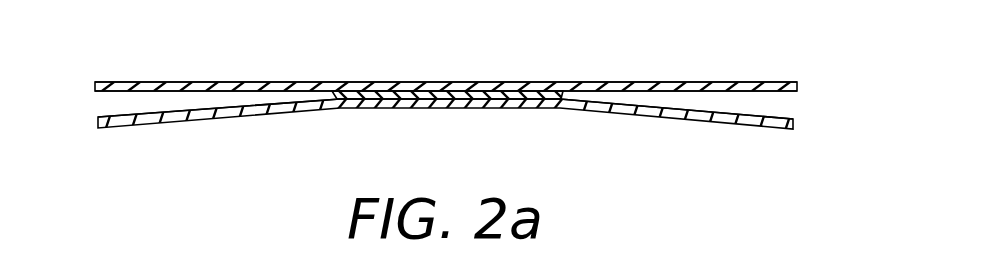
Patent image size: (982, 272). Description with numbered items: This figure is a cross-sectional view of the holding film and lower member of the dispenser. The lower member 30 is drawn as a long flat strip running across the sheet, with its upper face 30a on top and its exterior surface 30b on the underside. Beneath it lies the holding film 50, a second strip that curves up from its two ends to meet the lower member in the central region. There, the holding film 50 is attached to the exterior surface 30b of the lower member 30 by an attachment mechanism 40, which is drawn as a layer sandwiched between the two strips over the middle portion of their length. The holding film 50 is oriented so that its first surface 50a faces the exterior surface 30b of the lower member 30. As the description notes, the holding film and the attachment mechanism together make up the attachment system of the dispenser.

The lower member 30 is at (147, 83).
The upper surface of first strip 30a is at (757, 82).
The exterior surface of lower member 30b is at (774, 91).
The attachment mechanism 40 is at (450, 82).
The holding film 50 is at (167, 125).
The first surface of holding film 50a is at (122, 118).